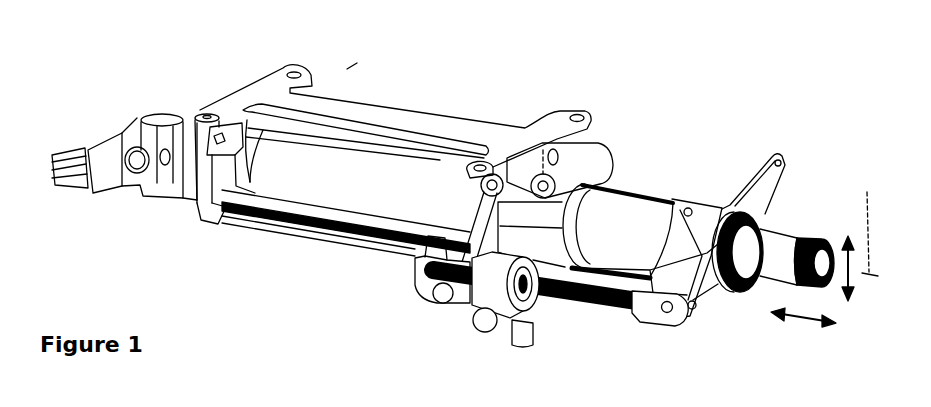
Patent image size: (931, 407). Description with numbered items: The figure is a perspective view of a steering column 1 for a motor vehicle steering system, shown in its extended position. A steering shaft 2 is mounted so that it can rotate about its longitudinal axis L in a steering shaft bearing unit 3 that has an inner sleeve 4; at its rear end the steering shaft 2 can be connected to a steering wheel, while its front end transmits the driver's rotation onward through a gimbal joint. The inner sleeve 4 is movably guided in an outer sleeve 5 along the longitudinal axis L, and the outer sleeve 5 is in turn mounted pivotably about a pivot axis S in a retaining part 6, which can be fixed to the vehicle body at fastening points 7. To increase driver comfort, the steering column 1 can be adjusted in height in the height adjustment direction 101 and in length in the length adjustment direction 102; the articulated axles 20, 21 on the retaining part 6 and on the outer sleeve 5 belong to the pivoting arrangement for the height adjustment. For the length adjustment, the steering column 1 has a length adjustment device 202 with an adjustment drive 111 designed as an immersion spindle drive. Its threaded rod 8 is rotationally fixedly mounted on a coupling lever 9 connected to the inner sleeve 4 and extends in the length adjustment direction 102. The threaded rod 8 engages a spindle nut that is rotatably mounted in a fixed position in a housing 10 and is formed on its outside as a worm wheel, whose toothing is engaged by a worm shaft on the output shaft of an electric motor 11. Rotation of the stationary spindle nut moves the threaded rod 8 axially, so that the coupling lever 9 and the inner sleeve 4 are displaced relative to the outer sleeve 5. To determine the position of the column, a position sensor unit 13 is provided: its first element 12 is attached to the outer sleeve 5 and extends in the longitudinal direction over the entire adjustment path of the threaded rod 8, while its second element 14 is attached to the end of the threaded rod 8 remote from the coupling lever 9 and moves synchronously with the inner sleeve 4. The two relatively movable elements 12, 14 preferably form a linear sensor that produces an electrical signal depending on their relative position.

The steering column 1 is at (531, 77).
The steering shaft 2 is at (771, 246).
The steering shaft bearing unit 3 is at (685, 160).
The inner sleeve 4 is at (612, 222).
The outer sleeve 5 is at (383, 200).
The retaining part 6 is at (387, 117).
The fastening points 7 is at (209, 112).
The threaded rod 8 is at (592, 312).
The coupling lever 9 is at (675, 332).
The housing 10 is at (490, 287).
The electric motor 11 is at (583, 276).
The first element 12 is at (340, 238).
The position sensor unit 13 is at (389, 284).
The second element 14 is at (423, 275).
The articulated axle 20 is at (520, 190).
The articulated axle 21 is at (435, 212).
The height adjustment direction 101 is at (851, 266).
The length adjustment direction 102 is at (807, 318).
The adjustment drive 111 is at (542, 346).
The length adjustment device 202 is at (610, 331).
The longitudinal axis L is at (870, 225).
The pivot axis S is at (350, 66).